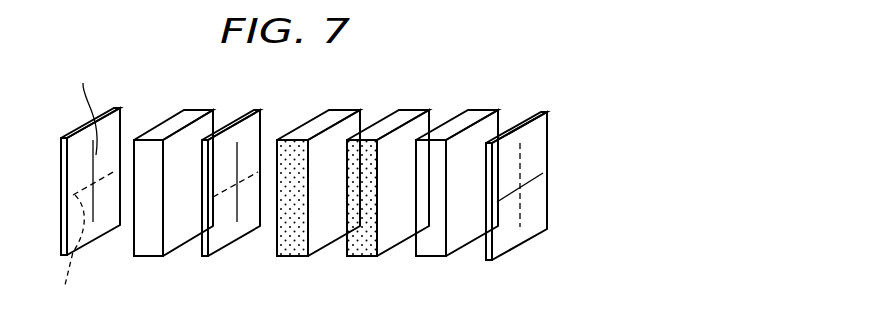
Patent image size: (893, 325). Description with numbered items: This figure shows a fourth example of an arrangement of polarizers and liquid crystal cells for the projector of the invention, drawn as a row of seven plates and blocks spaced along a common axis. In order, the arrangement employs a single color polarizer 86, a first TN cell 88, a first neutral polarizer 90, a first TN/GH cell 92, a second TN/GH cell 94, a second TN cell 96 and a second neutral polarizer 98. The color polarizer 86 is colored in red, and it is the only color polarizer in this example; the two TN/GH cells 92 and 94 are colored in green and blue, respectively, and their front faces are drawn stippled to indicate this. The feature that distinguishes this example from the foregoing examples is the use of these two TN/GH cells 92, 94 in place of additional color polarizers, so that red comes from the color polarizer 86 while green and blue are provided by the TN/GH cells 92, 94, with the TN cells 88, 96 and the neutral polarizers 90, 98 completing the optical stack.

The color polarizer 86 is at (119, 107).
The TN cell 88 is at (187, 108).
The neutral polarizer 90 is at (253, 108).
The TN/GH cell 92 is at (300, 258).
The TN/GH cell 94 is at (360, 258).
The TN cell 96 is at (430, 258).
The neutral polarizer 98 is at (541, 112).